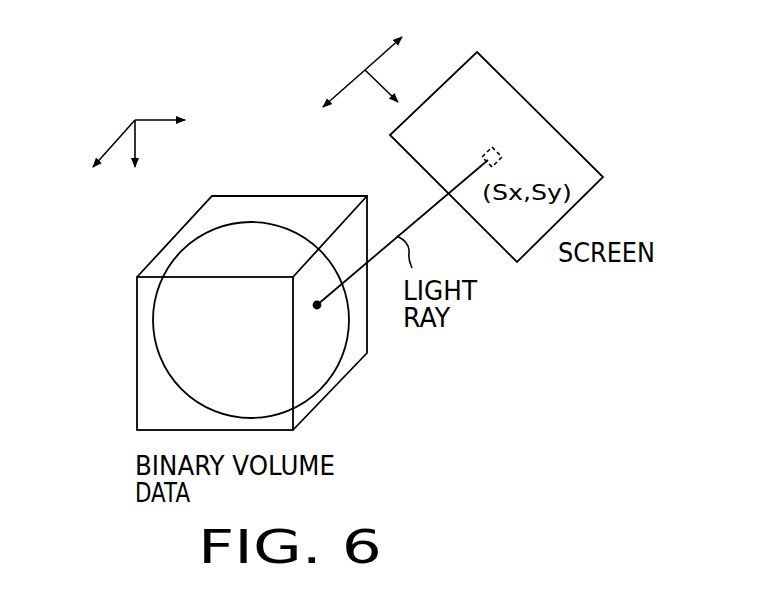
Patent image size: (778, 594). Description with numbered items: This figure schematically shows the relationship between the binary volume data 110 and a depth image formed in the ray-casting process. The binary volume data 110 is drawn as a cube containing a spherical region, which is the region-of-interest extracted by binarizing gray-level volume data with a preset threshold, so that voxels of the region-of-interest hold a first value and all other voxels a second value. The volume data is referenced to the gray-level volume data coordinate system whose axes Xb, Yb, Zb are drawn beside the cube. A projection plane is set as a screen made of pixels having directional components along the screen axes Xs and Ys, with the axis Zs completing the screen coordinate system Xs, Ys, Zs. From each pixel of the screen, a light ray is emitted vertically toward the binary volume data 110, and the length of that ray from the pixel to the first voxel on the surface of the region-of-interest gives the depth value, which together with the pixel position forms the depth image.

The binary volume data 110 is at (137, 355).
The Xb axis of gray-level volume data coordinate system Xb is at (177, 122).
The Yb axis of gray-level volume data coordinate system Yb is at (100, 155).
The Zb axis of gray-level volume data coordinate system Zb is at (151, 155).
The Xs axis of screen coordinate system Xs is at (400, 44).
The Ys axis of screen coordinate system Ys is at (394, 86).
The Zs axis of screen coordinate system Zs is at (326, 96).